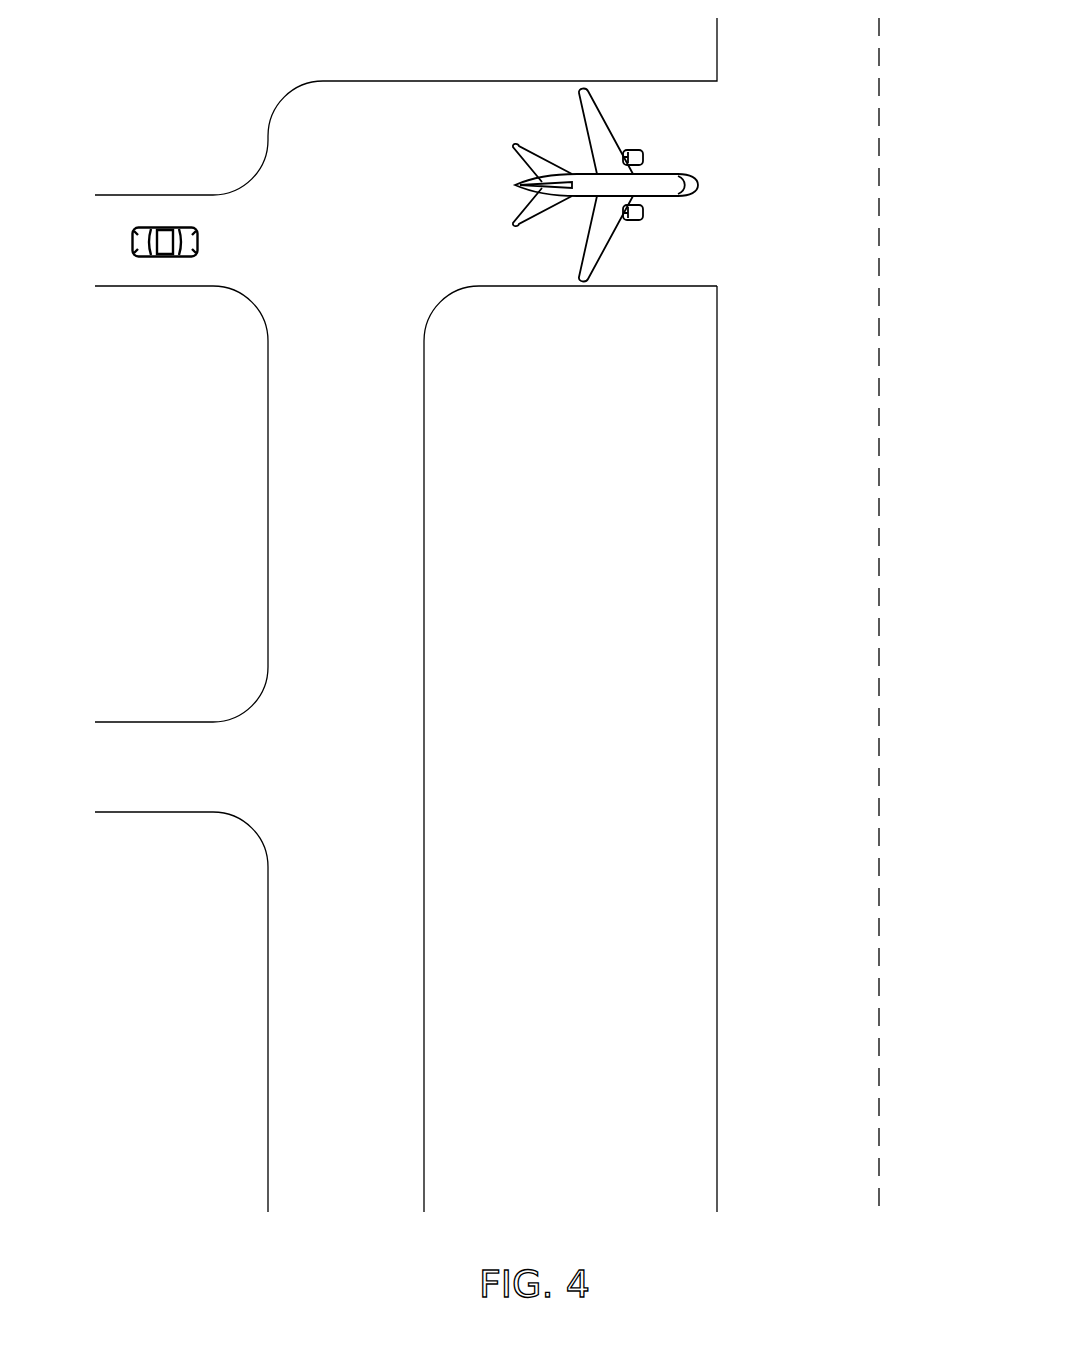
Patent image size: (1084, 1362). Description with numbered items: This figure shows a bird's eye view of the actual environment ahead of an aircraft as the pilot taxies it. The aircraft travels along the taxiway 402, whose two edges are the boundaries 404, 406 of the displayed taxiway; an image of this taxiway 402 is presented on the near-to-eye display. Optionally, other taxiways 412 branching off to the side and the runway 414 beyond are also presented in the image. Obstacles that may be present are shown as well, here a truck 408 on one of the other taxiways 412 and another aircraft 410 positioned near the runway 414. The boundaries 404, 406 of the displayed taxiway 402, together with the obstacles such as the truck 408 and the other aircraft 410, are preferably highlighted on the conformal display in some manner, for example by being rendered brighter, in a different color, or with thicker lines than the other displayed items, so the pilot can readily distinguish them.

The taxiway 402 is at (562, 749).
The boundary 404 is at (268, 913).
The boundary 406 is at (424, 913).
The truck 408 is at (198, 242).
The another aircraft 410 is at (698, 186).
The other taxiways 412 is at (428, 130).
The runway 414 is at (745, 493).